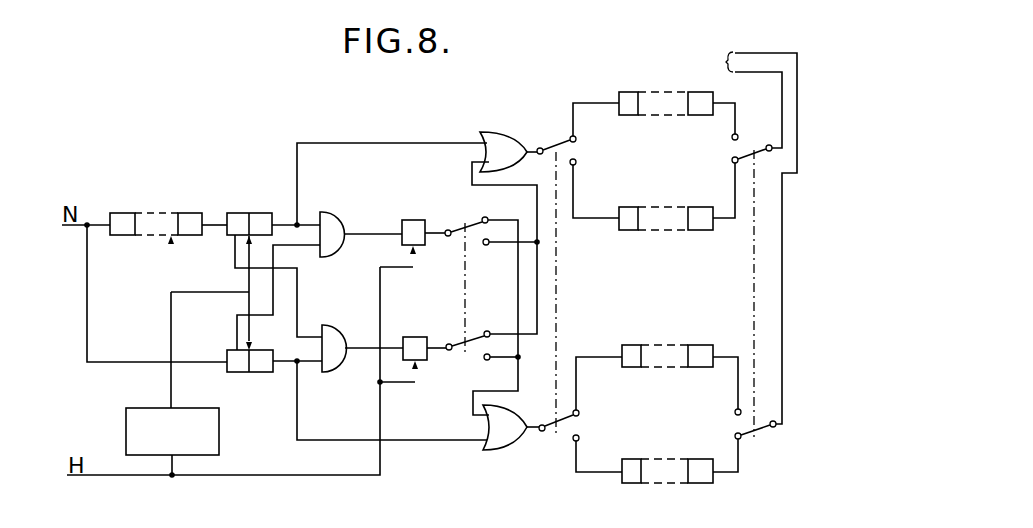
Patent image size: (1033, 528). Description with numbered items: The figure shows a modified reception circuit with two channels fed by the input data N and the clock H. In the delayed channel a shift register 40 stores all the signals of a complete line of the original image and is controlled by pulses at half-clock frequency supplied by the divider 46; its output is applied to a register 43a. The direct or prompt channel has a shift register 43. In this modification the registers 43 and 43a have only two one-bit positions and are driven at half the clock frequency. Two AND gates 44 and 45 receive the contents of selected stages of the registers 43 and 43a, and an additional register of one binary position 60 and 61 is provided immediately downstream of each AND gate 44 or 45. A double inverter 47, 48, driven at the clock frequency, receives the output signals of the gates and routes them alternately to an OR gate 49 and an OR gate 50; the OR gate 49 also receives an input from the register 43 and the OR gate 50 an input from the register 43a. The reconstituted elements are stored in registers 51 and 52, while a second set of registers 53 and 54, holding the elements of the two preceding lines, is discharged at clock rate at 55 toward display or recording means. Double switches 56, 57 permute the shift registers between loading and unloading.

The shift register 40 is at (124, 206).
The shift register 43 is at (236, 373).
The register 43a is at (241, 213).
The AND gate 44 is at (338, 339).
The AND gate 45 is at (330, 213).
The divider 46 is at (125, 425).
The double inverter 47 is at (463, 343).
The double inverter 48 is at (459, 226).
The OR gate 49 is at (493, 448).
The OR gate 50 is at (497, 137).
The register 51 is at (634, 350).
The register 52 is at (627, 100).
The register 53 is at (634, 462).
The register 54 is at (635, 215).
The output to display or recording means 55 is at (735, 245).
The double switch 56 is at (550, 433).
The double switch 57 is at (550, 147).
The one-binary-position register 60 is at (420, 337).
The one-binary-position register 61 is at (412, 220).